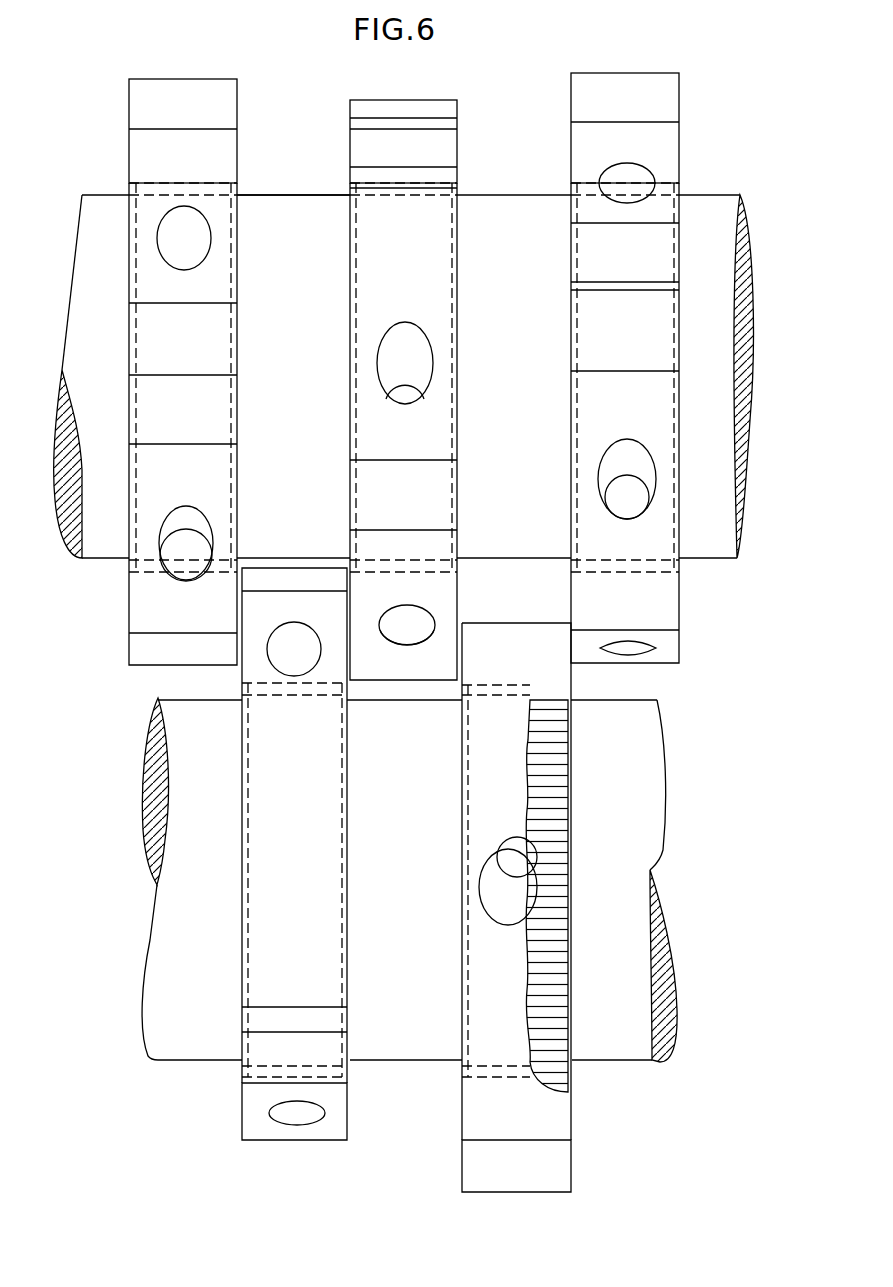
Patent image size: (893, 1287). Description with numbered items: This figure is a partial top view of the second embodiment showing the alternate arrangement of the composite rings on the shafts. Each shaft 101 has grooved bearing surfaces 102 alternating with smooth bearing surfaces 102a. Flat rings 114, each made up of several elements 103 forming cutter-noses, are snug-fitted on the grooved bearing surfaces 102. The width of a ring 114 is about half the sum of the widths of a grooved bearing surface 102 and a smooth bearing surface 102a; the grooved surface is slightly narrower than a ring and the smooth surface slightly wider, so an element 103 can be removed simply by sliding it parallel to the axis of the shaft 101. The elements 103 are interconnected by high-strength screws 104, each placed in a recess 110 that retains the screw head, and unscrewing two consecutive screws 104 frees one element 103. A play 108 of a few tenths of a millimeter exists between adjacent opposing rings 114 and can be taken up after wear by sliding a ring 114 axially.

The shaft 101 is at (708, 210).
The grooved bearing surface 102 is at (155, 181).
The smooth bearing surface 102a is at (292, 192).
The element 103 is at (293, 1015).
The screw 104 is at (200, 548).
The play 108 is at (240, 612).
The recess 110 is at (200, 520).
The flat ring 114 is at (128, 108).